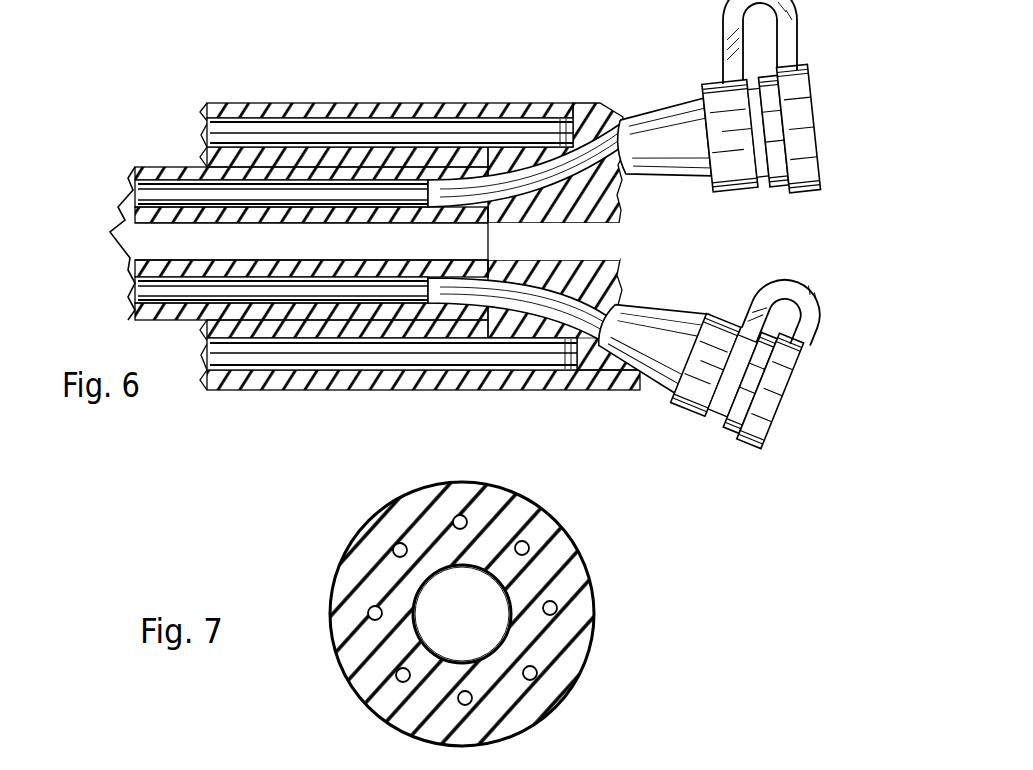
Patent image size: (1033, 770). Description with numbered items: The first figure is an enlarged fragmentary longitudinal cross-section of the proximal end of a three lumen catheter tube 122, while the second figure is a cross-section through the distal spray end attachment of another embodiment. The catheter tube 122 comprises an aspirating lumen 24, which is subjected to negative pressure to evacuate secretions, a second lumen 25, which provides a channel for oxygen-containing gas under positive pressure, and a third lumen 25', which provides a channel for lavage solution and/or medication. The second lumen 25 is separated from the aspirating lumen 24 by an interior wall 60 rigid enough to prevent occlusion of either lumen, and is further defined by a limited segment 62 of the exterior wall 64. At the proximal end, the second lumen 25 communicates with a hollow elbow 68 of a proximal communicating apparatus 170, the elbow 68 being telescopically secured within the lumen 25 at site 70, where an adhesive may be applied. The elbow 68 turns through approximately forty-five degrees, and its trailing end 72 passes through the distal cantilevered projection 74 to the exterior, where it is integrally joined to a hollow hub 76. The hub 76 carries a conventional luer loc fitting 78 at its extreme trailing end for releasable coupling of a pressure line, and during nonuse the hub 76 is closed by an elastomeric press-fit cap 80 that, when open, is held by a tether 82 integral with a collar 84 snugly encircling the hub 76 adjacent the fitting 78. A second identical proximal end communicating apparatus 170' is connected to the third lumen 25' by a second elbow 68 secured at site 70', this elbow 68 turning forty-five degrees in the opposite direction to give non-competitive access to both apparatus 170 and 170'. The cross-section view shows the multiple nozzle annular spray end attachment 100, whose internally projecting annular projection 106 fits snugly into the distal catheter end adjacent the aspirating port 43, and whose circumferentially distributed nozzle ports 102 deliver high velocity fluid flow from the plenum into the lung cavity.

In FIG. 6, the aspirating lumen 24 is at (140, 225).
In FIG. 6, the second lumen 25 is at (235, 278).
In FIG. 6, the third lumen 25' is at (281, 158).
In FIG. 7, the aspirating port 43 is at (412, 632).
In FIG. 6, the interior wall 60 is at (158, 262).
In FIG. 6, the limited segment of the exterior wall 62 is at (175, 313).
In FIG. 6, the exterior wall 64 is at (157, 170).
In FIG. 6, the hollow elbow 68 is at (557, 150).
In FIG. 6, the site 70 is at (392, 380).
In FIG. 6, the site 70' is at (390, 92).
In FIG. 6, the trailing end 72 is at (585, 352).
In FIG. 6, the distal cantilevered projection 74 is at (590, 348).
In FIG. 6, the hub 76 is at (645, 125).
In FIG. 6, the luer loc fitting 78 is at (790, 195).
In FIG. 6, the elastomeric press-fit cap 80 is at (812, 136).
In FIG. 6, the tether 82 is at (790, 30).
In FIG. 6, the collar 84 is at (733, 192).
In FIG. 7, the multiple nozzle annular spray end attachment 100 is at (586, 646).
In FIG. 7, the nozzle ports 102 is at (455, 524).
In FIG. 7, the annular projection 106 is at (433, 617).
In FIG. 6, the catheter tube 122 is at (136, 163).
In FIG. 6, the proximal communicating apparatus 170 is at (809, 306).
In FIG. 6, the second proximal end communicating apparatus 170' is at (702, 42).